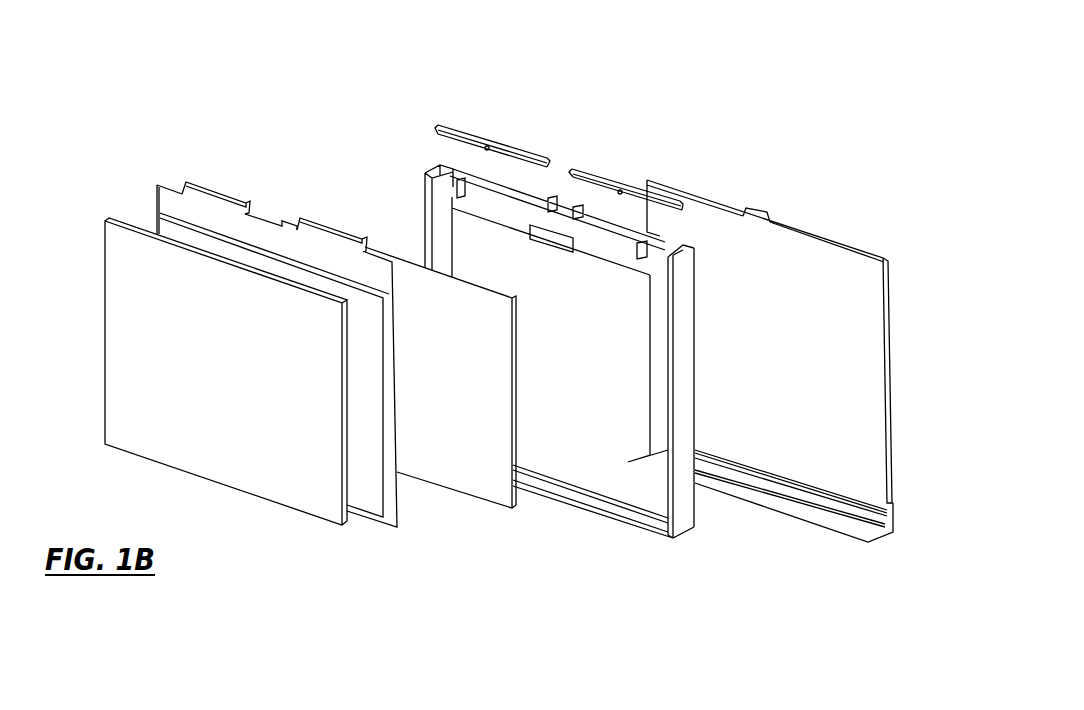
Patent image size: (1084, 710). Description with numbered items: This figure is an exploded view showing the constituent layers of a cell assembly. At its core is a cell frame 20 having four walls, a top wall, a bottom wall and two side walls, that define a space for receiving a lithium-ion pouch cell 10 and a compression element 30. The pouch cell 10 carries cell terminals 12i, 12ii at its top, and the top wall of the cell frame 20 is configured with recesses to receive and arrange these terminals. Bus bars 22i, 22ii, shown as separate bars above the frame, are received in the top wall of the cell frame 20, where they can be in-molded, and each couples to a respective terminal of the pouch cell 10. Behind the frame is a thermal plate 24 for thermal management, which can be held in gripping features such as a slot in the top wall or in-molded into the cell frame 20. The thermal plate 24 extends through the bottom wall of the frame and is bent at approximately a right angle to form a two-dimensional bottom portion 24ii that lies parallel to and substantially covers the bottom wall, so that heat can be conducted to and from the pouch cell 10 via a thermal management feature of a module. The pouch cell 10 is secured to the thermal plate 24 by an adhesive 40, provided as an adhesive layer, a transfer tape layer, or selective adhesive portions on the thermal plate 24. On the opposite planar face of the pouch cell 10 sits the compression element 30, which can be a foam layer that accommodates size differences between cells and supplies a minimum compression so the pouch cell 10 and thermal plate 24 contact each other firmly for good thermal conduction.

The lithium-ion pouch cell 10 is at (132, 150).
The cell terminal 12i is at (258, 102).
The cell terminal 12ii is at (377, 143).
The cell frame 20 is at (738, 575).
The bus bar 22i is at (555, 66).
The bus bar 22ii is at (683, 107).
The thermal plate 24 is at (900, 229).
The bottom portion 24ii is at (846, 596).
The compression element 30 is at (101, 198).
The adhesive 40 is at (557, 569).